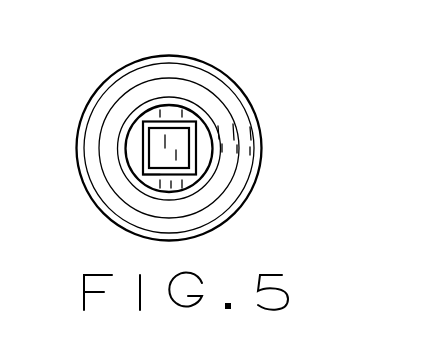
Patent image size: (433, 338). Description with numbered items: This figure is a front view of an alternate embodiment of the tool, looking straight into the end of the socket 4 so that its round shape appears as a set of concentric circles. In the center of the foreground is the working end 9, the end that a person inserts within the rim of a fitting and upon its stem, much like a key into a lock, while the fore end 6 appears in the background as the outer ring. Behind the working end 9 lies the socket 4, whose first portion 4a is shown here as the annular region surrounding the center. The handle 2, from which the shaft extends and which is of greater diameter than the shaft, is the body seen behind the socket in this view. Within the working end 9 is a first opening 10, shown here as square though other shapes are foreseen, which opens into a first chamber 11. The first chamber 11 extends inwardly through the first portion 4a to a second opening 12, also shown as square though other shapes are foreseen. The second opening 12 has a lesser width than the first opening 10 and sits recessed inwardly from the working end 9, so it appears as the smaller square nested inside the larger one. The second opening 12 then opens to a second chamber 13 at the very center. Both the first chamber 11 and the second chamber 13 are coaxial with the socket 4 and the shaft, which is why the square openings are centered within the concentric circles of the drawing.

The handle 2 is at (212, 62).
The fore end 6 is at (243, 93).
The socket 4 is at (213, 136).
The first portion 4a is at (210, 160).
The working end 9 is at (182, 182).
The first opening 10 is at (142, 163).
The first chamber 11 is at (145, 137).
The second opening 12 is at (157, 126).
The second chamber 13 is at (172, 158).